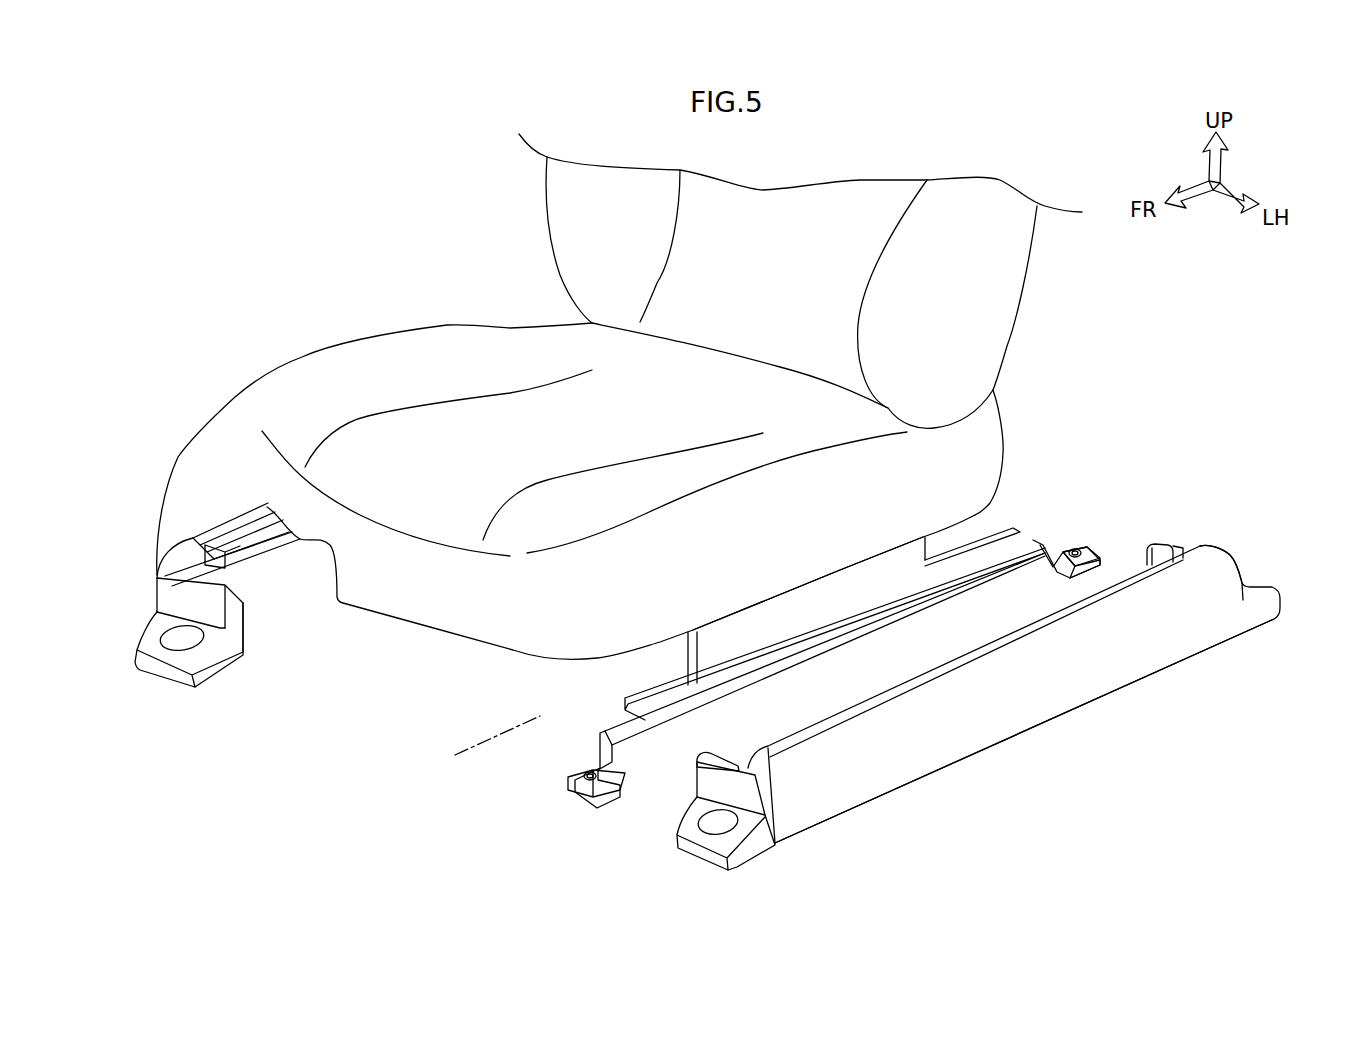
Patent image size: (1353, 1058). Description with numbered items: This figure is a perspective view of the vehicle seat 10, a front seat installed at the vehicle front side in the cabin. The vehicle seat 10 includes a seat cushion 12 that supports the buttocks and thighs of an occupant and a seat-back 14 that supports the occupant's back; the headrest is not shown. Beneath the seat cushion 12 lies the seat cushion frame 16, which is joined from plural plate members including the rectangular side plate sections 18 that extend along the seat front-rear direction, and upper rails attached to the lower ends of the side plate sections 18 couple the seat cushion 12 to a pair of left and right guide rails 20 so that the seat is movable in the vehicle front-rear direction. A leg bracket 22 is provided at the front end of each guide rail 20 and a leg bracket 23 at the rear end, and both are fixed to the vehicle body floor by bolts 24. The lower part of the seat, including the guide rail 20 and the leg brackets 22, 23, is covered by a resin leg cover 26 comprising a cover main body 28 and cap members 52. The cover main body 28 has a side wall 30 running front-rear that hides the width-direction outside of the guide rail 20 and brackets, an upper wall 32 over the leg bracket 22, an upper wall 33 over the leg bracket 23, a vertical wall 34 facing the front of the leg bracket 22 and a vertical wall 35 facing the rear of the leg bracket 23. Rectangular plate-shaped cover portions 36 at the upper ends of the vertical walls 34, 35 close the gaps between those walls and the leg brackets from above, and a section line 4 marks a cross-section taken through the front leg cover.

The vehicle seat 10 is at (1020, 170).
The seat cushion 12 is at (975, 460).
The seat-back 14 is at (990, 297).
The seat cushion frame 16 is at (808, 583).
The side plate section 18 is at (833, 592).
The guide rail 20 is at (264, 548).
The leg bracket 22 is at (232, 583).
The leg bracket 23 is at (1062, 550).
The bolt 24 is at (1080, 557).
The leg cover 26 is at (187, 702).
The cover main body 28 is at (208, 530).
The side wall 30 is at (900, 760).
The upper wall 32 is at (199, 655).
The upper wall 33 is at (1250, 577).
The vertical wall 34 is at (172, 596).
The vertical wall 35 is at (1185, 548).
The cover portion 36 is at (158, 510).
The cap member 52 is at (178, 640).
The section line 4 is at (550, 712).